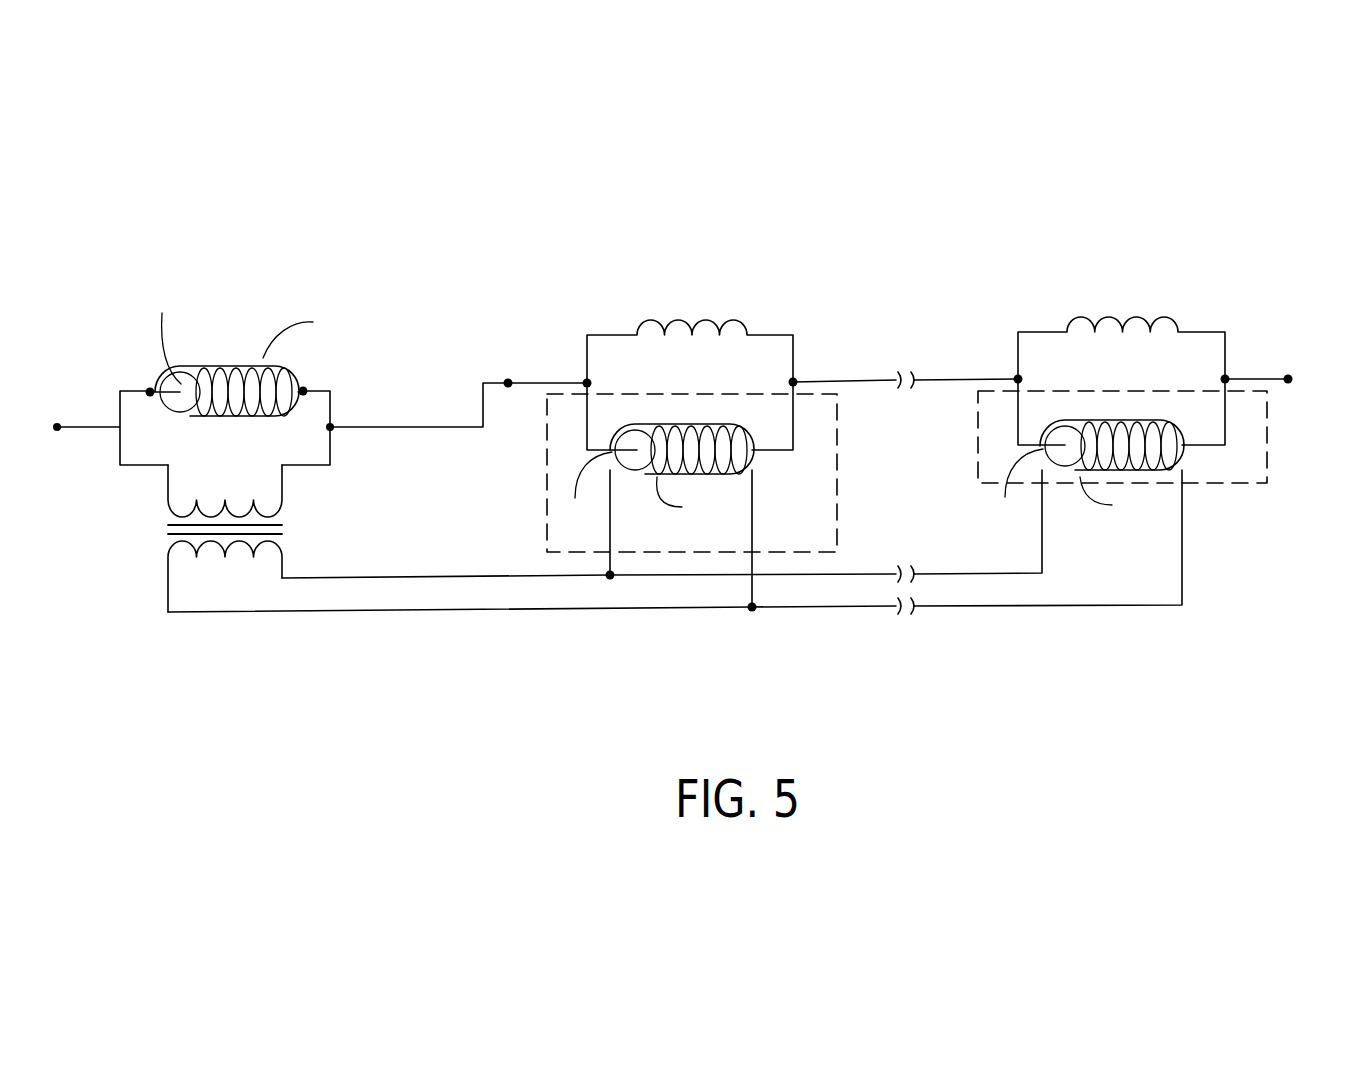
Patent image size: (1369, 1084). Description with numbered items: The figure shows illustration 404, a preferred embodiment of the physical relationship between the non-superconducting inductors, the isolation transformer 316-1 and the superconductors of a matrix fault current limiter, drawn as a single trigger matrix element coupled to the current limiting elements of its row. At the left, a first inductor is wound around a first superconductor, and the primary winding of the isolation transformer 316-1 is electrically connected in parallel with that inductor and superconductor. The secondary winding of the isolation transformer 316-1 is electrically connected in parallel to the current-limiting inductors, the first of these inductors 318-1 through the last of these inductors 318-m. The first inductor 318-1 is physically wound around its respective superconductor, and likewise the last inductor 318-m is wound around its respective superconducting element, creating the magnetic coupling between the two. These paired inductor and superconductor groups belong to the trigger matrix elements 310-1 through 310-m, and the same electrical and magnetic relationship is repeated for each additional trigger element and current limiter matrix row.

The illustration 404 is at (718, 207).
The isolation transformer 316-1 is at (287, 530).
The trigger matrix element 310-1 is at (733, 415).
The inductor LT11 318-1 is at (747, 443).
The trigger matrix element 310-m is at (1160, 407).
The inductor LT1m 318-m is at (1160, 470).